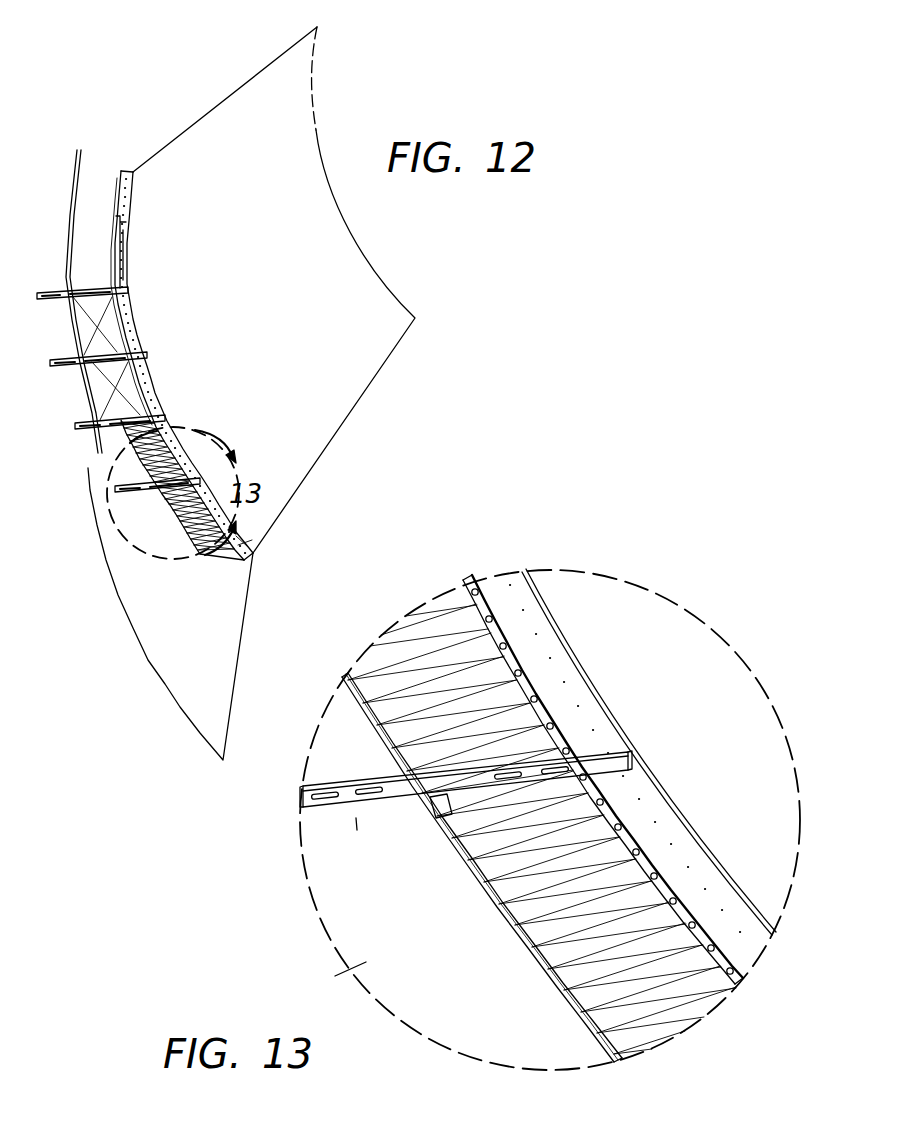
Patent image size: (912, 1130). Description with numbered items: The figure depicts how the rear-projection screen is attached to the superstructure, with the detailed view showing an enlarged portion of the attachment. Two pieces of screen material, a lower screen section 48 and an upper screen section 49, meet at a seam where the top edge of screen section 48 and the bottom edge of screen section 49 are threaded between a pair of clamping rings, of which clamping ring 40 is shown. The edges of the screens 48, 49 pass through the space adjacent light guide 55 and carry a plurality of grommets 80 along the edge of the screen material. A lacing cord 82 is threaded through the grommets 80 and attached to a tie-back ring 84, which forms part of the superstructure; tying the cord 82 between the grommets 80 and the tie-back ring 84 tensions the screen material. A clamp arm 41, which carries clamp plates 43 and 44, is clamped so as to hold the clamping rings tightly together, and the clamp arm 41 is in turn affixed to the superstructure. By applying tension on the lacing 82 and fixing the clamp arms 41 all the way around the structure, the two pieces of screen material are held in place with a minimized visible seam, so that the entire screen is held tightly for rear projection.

In FIG. 12, the clamping ring 40 is at (142, 390).
In FIG. 13, the clamping ring 40 is at (540, 597).
In FIG. 12, the clamp arm 41 is at (80, 285).
In FIG. 13, the clamp arm 41 is at (356, 818).
In FIG. 13, the clamp plate 43 is at (333, 785).
In FIG. 13, the clamp plate 44 is at (445, 805).
In FIG. 12, the screen section 48 is at (242, 645).
In FIG. 13, the screen section 48 is at (362, 964).
In FIG. 12, the screen section 49 is at (245, 118).
In FIG. 13, the screen section 49 is at (668, 630).
In FIG. 12, the light guide 55 is at (126, 258).
In FIG. 12, the grommet 80 is at (146, 368).
In FIG. 13, the grommet 80 is at (625, 838).
In FIG. 12, the lacing cord 82 is at (119, 440).
In FIG. 13, the lacing cord 82 is at (543, 923).
In FIG. 12, the tie-back ring 84 is at (72, 320).
In FIG. 13, the tie-back ring 84 is at (500, 913).